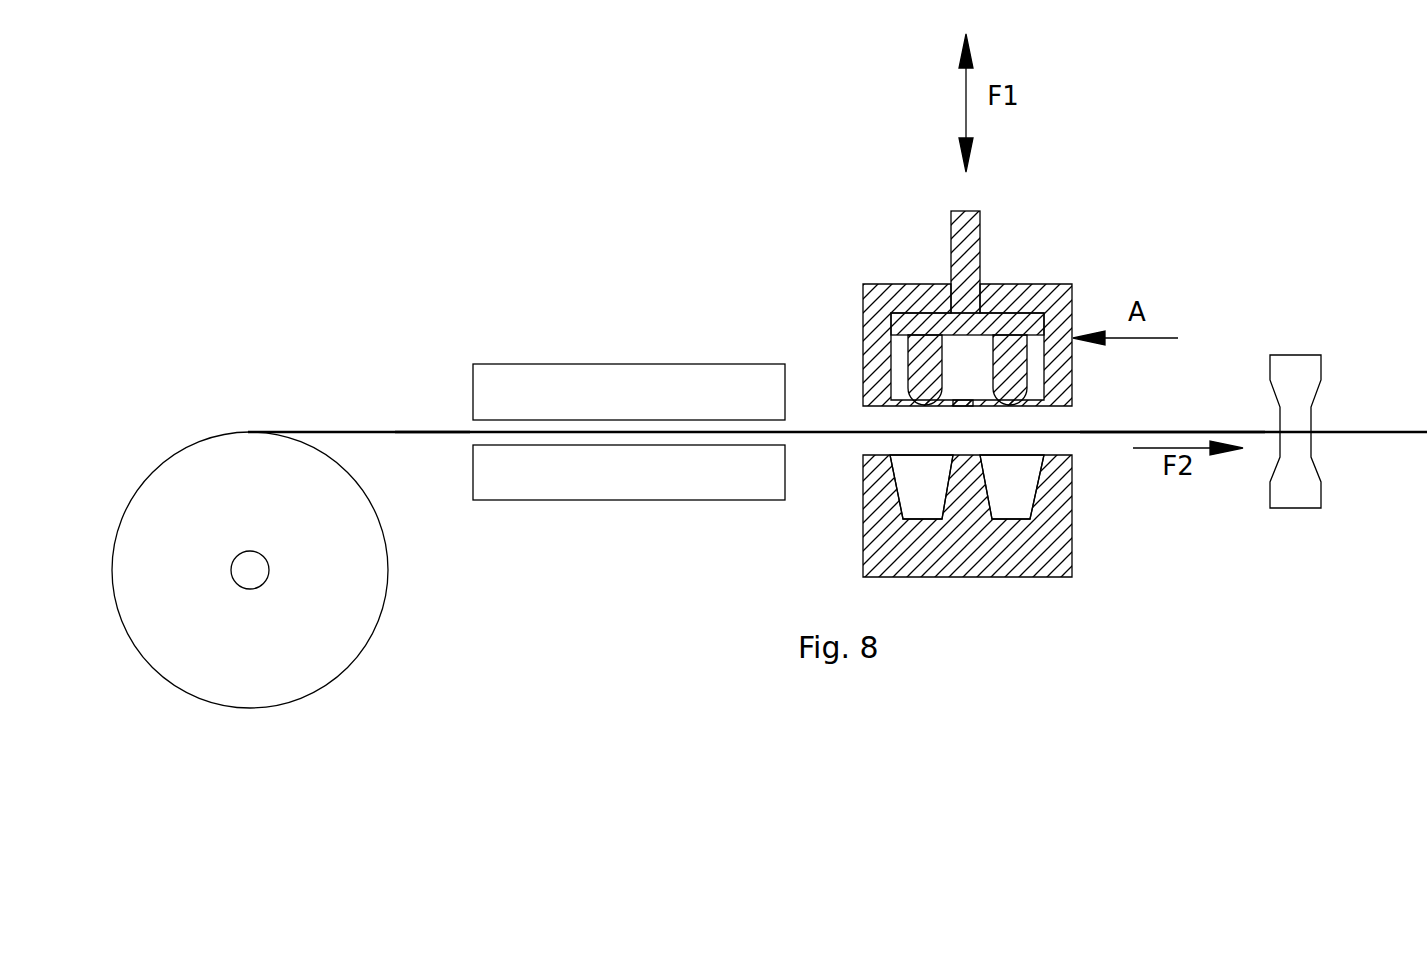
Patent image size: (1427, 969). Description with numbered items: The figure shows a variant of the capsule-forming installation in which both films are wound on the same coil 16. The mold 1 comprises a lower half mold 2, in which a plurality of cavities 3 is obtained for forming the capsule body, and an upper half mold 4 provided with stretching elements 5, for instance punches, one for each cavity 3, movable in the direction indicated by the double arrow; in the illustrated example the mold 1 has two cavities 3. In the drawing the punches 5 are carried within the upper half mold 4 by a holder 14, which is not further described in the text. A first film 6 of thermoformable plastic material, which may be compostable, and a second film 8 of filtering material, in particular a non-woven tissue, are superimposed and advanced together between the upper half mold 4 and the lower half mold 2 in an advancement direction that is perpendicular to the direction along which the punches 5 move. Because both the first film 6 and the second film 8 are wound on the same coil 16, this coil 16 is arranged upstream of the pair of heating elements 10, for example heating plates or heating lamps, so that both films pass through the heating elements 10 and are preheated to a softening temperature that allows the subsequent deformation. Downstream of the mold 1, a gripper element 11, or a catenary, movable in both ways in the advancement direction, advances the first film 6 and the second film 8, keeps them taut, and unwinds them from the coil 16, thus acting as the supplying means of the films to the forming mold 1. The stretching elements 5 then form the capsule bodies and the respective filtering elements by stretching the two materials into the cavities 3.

The mold 1 is at (1003, 386).
The lower half mold 2 is at (1001, 565).
The cavity 3 is at (928, 519).
The upper half mold 4 is at (1008, 296).
The stretching element 5 is at (927, 368).
The first film 6 is at (398, 433).
The second film 8 is at (442, 430).
The heating elements 10 is at (620, 378).
The gripper element 11 is at (1293, 365).
The punch holder 14 is at (1073, 300).
The coil 16 is at (330, 615).